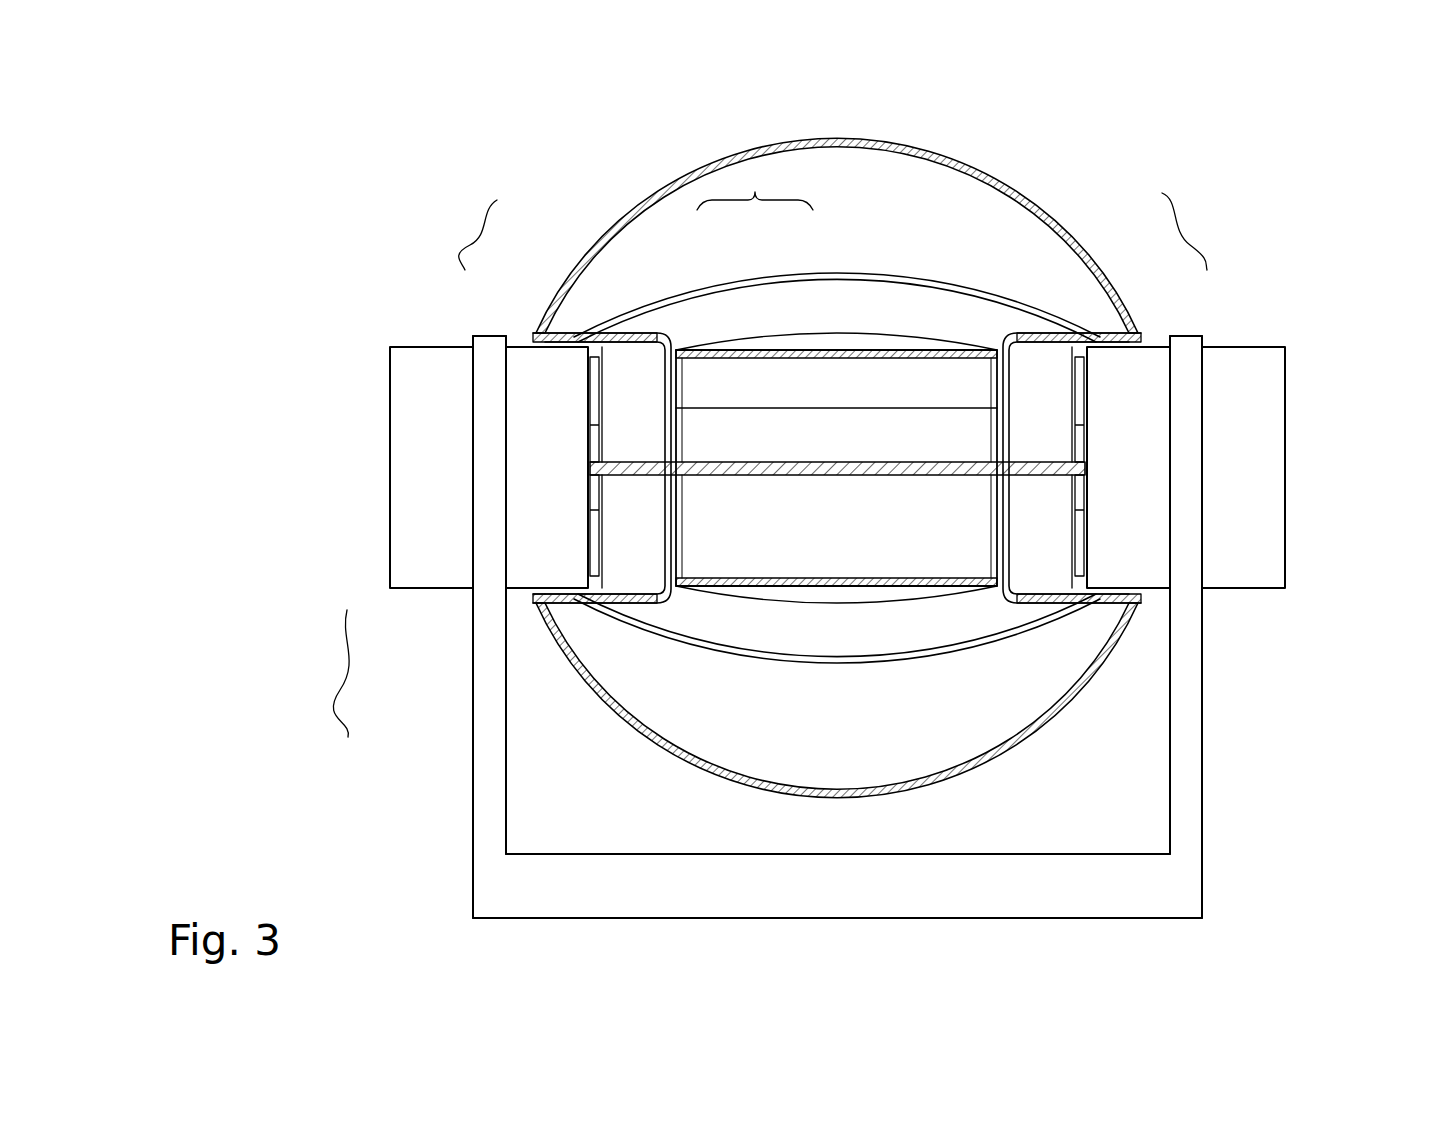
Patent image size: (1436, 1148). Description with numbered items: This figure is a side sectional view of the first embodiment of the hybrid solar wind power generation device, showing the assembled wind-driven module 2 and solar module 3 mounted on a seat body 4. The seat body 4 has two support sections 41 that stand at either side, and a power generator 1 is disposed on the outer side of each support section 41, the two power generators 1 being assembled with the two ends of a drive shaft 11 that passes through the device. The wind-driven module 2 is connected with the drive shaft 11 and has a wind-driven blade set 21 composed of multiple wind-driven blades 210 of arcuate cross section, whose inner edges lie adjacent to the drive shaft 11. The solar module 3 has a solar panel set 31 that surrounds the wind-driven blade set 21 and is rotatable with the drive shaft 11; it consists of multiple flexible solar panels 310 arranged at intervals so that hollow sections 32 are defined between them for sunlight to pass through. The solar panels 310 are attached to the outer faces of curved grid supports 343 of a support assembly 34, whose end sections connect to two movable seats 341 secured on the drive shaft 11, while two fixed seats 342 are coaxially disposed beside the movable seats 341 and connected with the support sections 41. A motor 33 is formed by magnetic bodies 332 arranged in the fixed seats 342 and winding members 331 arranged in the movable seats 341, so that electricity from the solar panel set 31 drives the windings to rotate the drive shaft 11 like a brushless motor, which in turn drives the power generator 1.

The power generator 1 is at (405, 432).
The wind-driven module 2 is at (883, 333).
The solar module 3 is at (1058, 200).
The seat body 4 is at (1033, 909).
The drive shaft 11 is at (890, 475).
The wind-driven blade set 21 is at (755, 189).
The solar panel set 31 is at (953, 62).
The hollow section 32 is at (832, 187).
The motor 33 is at (835, 231).
The support assembly 34 is at (323, 673).
The support section 41 is at (480, 778).
The wind-driven blade 210 is at (770, 427).
The solar panel 310 is at (918, 142).
The winding member 331 is at (665, 387).
The magnetic body 332 is at (583, 330).
The movable seat 341 is at (628, 583).
The fixed seat 342 is at (535, 557).
The grid support 343 is at (647, 727).